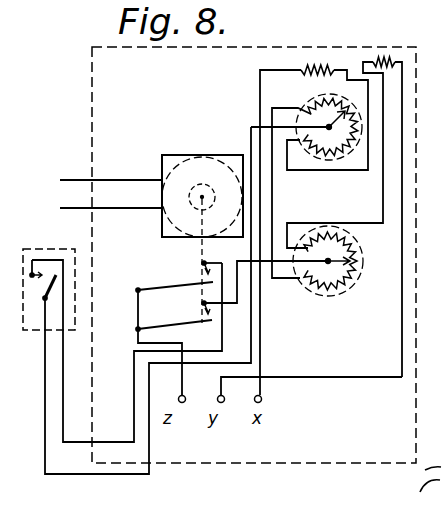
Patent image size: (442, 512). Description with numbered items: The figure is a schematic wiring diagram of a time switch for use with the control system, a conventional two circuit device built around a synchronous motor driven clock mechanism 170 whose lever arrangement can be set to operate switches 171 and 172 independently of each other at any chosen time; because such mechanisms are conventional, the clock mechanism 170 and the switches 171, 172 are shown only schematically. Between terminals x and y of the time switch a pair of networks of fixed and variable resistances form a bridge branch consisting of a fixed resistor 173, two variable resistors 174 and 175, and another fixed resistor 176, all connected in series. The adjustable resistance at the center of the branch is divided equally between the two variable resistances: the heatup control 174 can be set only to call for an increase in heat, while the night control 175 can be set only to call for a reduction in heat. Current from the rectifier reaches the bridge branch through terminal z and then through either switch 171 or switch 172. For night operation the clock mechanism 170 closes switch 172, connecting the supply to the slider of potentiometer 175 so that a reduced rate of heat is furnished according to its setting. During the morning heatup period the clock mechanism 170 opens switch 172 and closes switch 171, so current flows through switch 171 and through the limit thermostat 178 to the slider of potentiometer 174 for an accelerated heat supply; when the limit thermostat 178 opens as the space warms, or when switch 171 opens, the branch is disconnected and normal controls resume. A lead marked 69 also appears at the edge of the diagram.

The conductor 69 is at (348, 0).
The clock mechanism 170 is at (212, 155).
The switch 171 is at (200, 275).
The switch 172 is at (200, 312).
The fixed resistor 173 is at (299, 68).
The variable resistor 174 is at (325, 96).
The variable resistor 175 is at (326, 297).
The fixed resistor 176 is at (383, 56).
The limit thermostat 178 is at (61, 247).